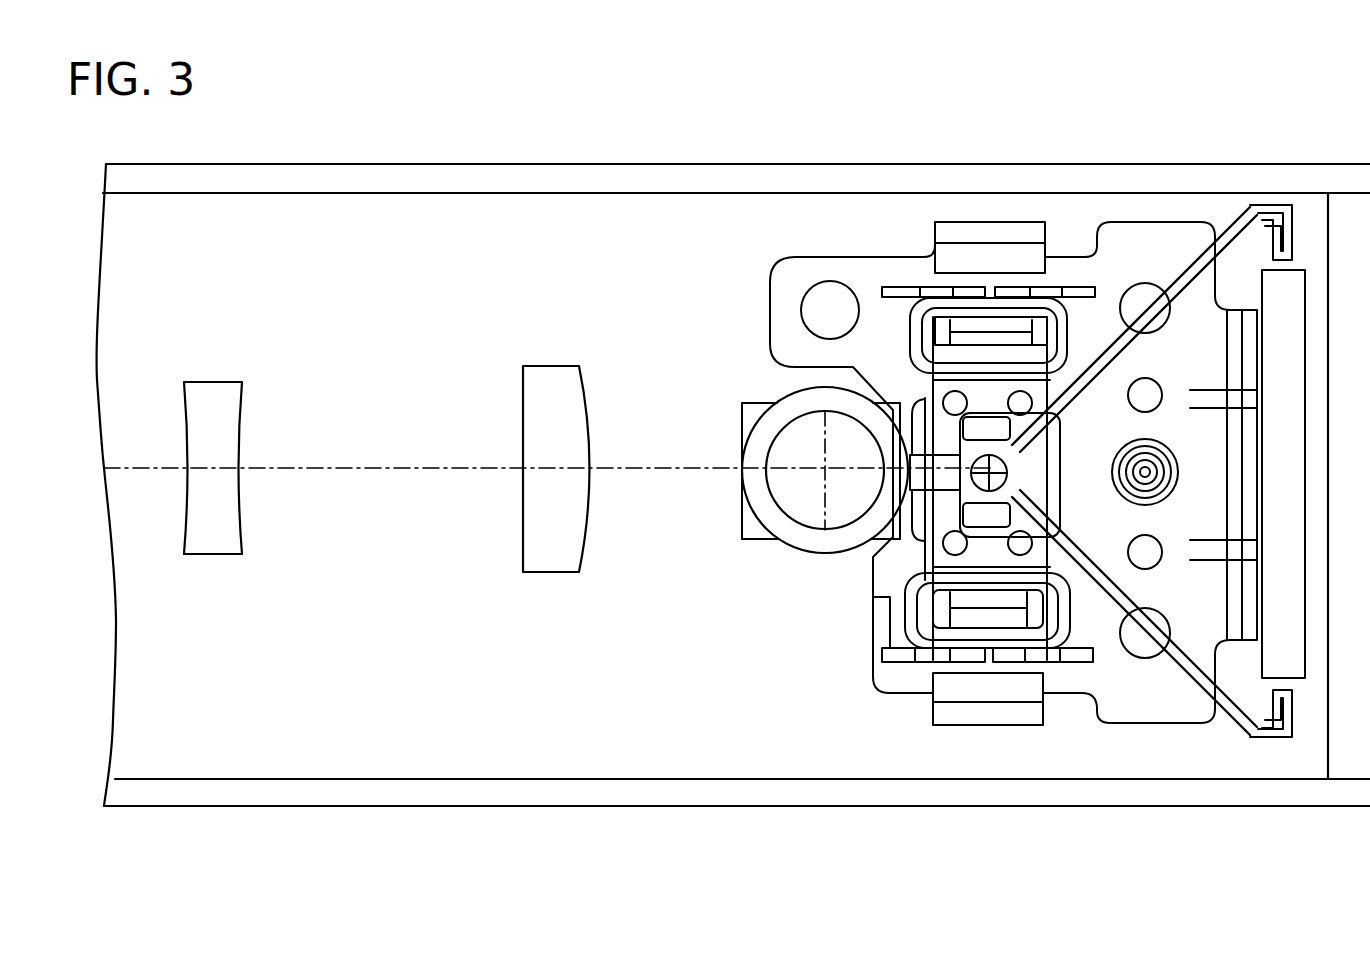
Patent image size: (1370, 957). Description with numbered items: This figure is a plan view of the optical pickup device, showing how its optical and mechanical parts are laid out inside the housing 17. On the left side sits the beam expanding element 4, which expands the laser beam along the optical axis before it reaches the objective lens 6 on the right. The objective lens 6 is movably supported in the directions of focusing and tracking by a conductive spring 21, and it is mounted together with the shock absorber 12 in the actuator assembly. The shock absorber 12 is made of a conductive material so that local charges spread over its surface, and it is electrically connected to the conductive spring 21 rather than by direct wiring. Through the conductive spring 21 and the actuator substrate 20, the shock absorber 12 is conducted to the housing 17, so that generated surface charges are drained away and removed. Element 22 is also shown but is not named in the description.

The beam expanding element 4 is at (597, 353).
The objective lens 6 is at (800, 450).
The shock absorber 12 is at (767, 512).
The housing 17 is at (847, 793).
The actuator substrate 20 is at (770, 296).
The conductive spring 21 is at (1222, 770).
The sensor block 22 is at (930, 478).